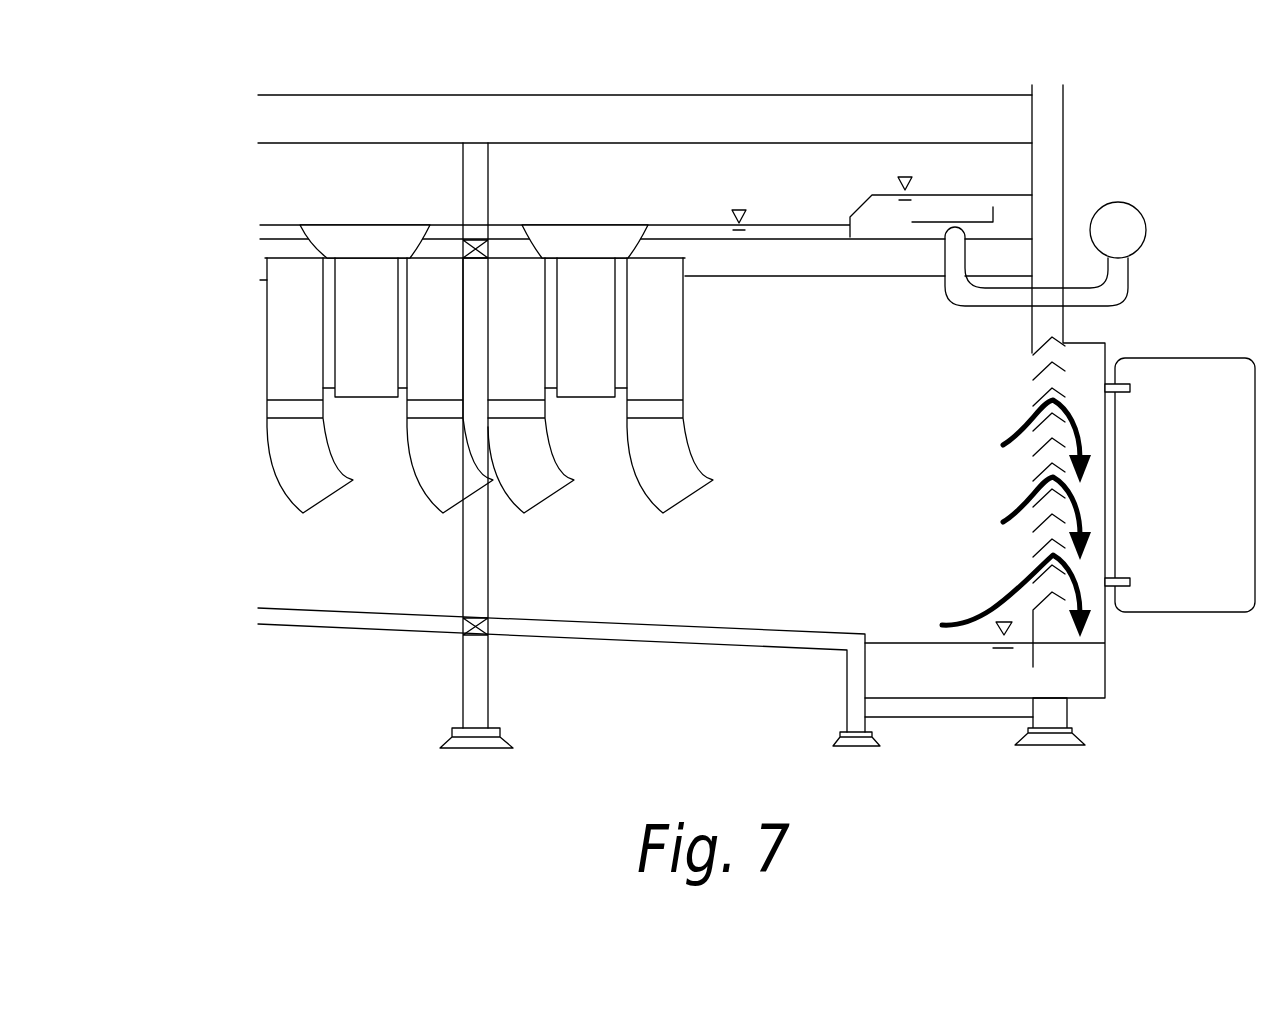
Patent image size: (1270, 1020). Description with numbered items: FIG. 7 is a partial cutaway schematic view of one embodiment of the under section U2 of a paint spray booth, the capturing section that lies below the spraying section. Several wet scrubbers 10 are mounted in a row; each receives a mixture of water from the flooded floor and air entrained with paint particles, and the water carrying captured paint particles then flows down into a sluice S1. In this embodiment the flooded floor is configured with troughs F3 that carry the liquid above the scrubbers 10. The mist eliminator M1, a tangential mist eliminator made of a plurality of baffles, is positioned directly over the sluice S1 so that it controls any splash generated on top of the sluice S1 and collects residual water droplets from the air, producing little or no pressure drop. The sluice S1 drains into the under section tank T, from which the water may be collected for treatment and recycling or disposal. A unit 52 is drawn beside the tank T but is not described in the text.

The wet scrubber 10 is at (288, 338).
The troughs F3 is at (933, 188).
The under section U2 is at (1148, 170).
The under section tank T is at (906, 393).
The mist eliminator M1 is at (1015, 542).
The control unit 52 is at (1210, 502).
The sluice S1 is at (850, 686).